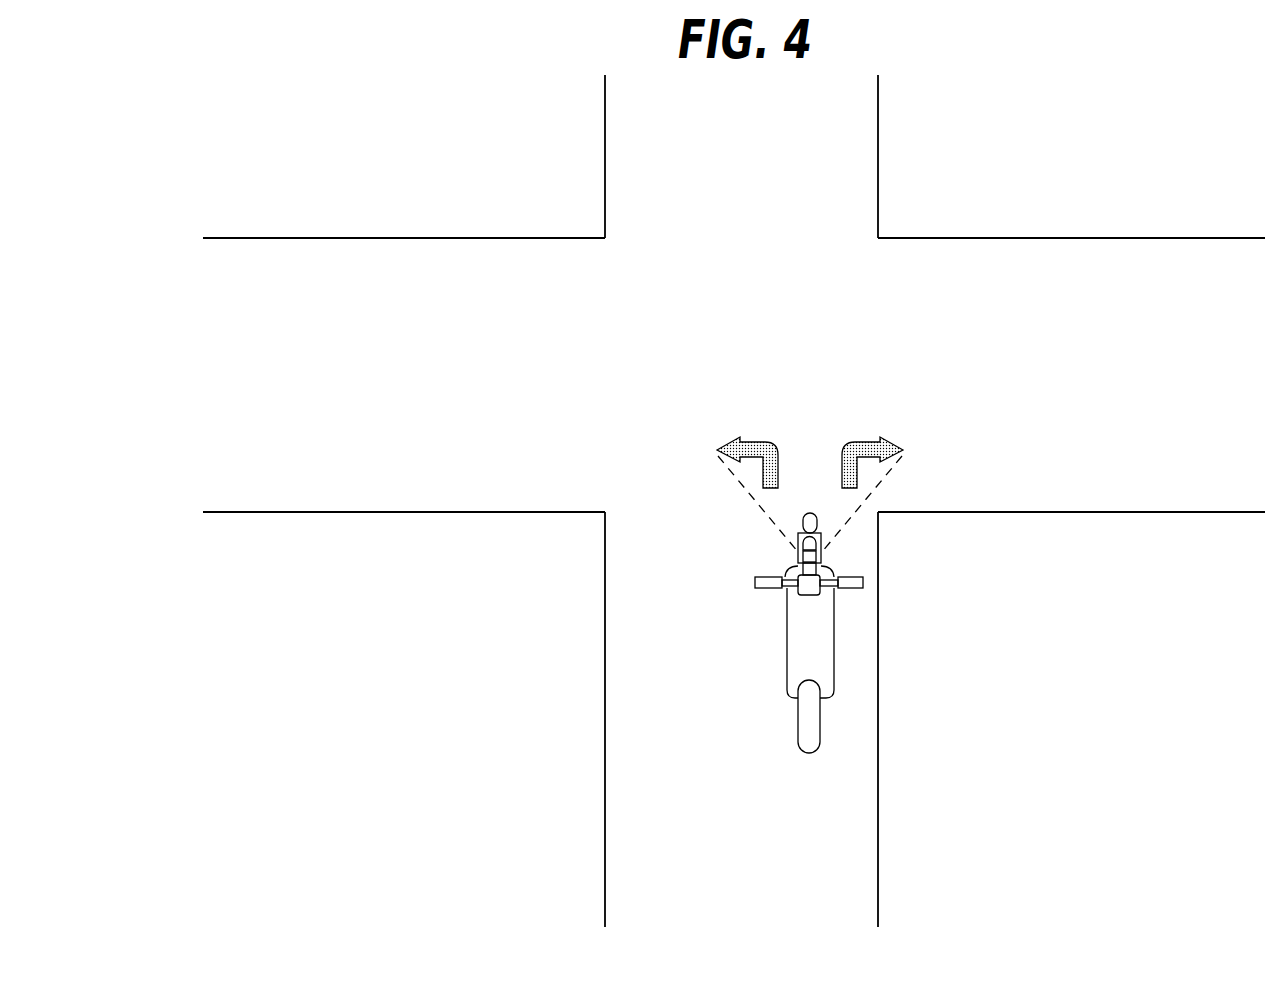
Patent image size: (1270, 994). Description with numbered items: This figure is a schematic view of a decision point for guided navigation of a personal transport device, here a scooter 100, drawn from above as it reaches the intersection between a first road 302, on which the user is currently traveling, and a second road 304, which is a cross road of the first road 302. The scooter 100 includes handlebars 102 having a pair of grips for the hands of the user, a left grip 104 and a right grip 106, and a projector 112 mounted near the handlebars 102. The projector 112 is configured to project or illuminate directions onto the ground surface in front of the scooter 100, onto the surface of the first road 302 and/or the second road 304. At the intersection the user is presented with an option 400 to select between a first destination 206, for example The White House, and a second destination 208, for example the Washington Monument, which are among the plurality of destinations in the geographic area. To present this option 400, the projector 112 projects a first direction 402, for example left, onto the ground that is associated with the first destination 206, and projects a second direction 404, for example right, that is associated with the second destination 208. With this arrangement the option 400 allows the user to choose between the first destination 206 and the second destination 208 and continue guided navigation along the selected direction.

The scooter 100 is at (814, 633).
The handlebars 102 is at (795, 564).
The left grip 104 is at (762, 588).
The right grip 106 is at (851, 588).
The projector 112 is at (818, 565).
The first destination 206 is at (568, 385).
The second destination 208 is at (1020, 368).
The first road 302 is at (755, 848).
The second road 304 is at (1193, 388).
The option 400 is at (803, 438).
The first direction 402 is at (748, 438).
The second direction 404 is at (868, 438).